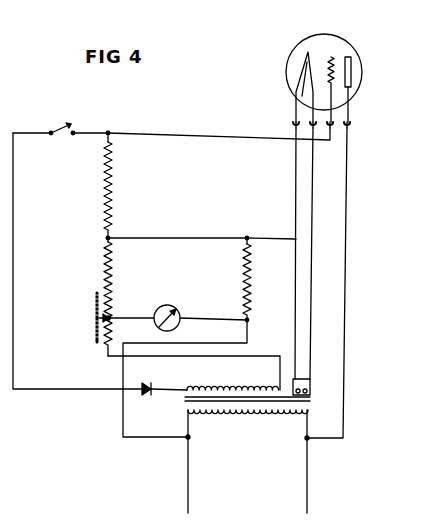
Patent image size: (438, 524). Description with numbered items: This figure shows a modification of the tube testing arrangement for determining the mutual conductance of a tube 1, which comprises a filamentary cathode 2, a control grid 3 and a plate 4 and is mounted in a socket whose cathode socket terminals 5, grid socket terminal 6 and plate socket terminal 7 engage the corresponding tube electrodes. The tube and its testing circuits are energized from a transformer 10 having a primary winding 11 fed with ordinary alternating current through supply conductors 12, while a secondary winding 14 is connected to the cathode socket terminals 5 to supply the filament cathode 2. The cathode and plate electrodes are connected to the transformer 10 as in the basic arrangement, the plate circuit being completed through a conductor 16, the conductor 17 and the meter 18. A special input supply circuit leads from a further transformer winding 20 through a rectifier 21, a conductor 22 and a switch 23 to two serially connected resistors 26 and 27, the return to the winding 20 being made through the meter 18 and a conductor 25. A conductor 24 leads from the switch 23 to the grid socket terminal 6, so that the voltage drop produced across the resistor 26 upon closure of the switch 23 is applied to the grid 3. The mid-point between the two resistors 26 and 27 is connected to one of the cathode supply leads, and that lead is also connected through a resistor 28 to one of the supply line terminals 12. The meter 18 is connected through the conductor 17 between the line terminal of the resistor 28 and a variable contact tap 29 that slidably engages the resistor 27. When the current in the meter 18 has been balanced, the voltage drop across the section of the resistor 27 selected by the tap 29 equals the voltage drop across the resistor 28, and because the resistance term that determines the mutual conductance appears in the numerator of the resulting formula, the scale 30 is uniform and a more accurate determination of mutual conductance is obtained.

The tube 1 is at (357, 90).
The filamentary cathode 2 is at (302, 70).
The control grid 3 is at (331, 57).
The plate 4 is at (351, 70).
The cathode socket terminals 5 is at (304, 131).
The grid socket terminal 6 is at (335, 131).
The plate socket terminal 7 is at (349, 127).
The transformer 10 is at (326, 408).
The primary winding 11 is at (255, 414).
The supply conductors 12 is at (190, 484).
The secondary winding 14 is at (310, 384).
The conductor 16 is at (123, 413).
The conductor 17 is at (130, 318).
The meter 18 is at (178, 310).
The secondary transformer winding 20 is at (228, 388).
The rectifier 21 is at (150, 386).
The conductor 22 is at (13, 272).
The switch 23 is at (70, 125).
The conductor 24 is at (183, 133).
The conductor 25 is at (260, 357).
The resistor 26 is at (112, 170).
The resistor 27 is at (112, 278).
The resistor 28 is at (251, 258).
The variable contact tap 29 is at (113, 312).
The scale 30 is at (95, 319).